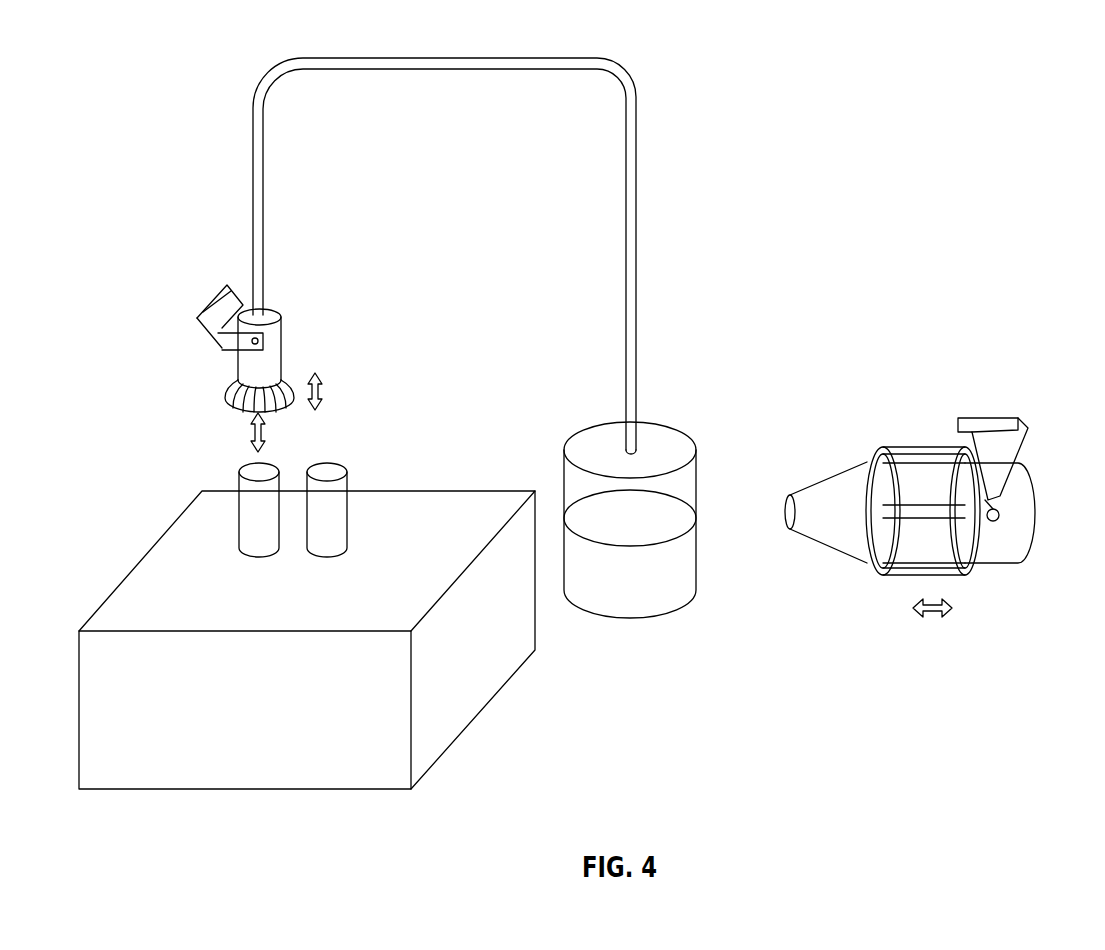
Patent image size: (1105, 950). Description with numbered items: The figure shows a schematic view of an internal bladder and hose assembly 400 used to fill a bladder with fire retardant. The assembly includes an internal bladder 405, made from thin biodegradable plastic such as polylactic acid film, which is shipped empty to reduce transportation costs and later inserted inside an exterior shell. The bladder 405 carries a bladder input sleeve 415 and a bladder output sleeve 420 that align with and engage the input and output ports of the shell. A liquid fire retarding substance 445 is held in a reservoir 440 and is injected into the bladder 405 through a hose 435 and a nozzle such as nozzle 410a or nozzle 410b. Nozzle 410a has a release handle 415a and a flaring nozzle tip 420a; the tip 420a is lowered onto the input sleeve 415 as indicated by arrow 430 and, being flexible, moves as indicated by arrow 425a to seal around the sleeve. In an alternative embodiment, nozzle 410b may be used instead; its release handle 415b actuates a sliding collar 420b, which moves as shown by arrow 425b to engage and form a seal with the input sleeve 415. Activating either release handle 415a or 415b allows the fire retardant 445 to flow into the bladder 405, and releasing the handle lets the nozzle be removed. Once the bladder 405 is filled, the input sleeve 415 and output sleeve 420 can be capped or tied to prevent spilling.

The internal bladder and hose assembly 400 is at (713, 82).
The internal bladder 405 is at (158, 504).
The bladder input sleeve 415 is at (253, 553).
The bladder output sleeve 420 is at (328, 552).
The nozzle 410a is at (260, 334).
The release handle 415a is at (197, 317).
The flaring nozzle tip 420a is at (285, 373).
The arrow 425a is at (323, 393).
The arrow 430 is at (252, 433).
The hose 435 is at (532, 58).
The reservoir 440 is at (653, 519).
The liquid fire retarding substance 445 is at (665, 613).
The nozzle 410b is at (930, 492).
The release handle 415b is at (998, 418).
The sliding collar 420b is at (877, 448).
The arrow 425b is at (933, 620).